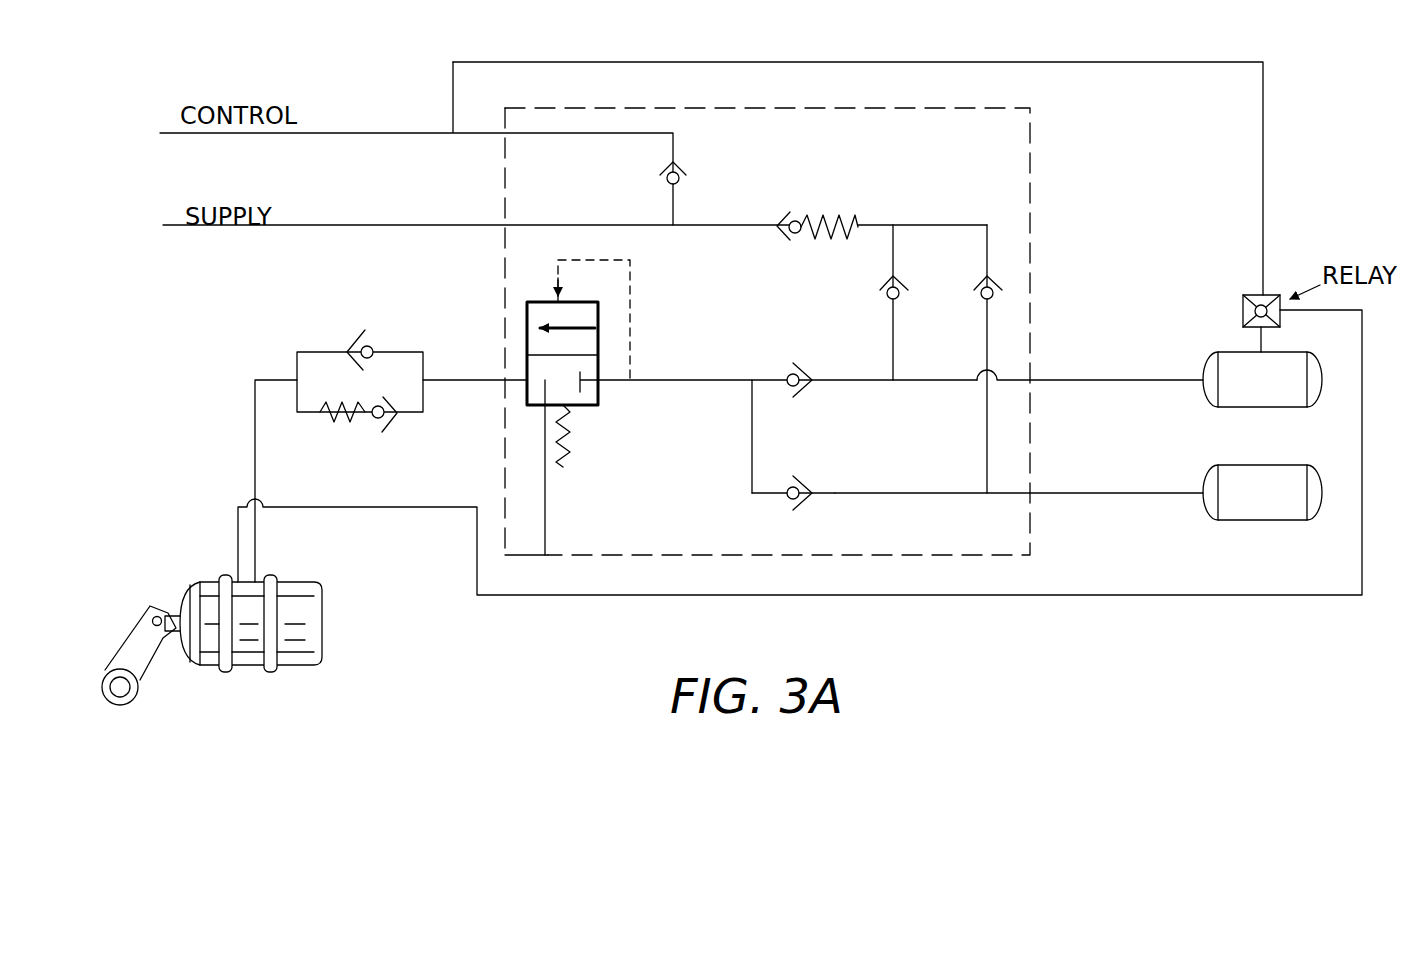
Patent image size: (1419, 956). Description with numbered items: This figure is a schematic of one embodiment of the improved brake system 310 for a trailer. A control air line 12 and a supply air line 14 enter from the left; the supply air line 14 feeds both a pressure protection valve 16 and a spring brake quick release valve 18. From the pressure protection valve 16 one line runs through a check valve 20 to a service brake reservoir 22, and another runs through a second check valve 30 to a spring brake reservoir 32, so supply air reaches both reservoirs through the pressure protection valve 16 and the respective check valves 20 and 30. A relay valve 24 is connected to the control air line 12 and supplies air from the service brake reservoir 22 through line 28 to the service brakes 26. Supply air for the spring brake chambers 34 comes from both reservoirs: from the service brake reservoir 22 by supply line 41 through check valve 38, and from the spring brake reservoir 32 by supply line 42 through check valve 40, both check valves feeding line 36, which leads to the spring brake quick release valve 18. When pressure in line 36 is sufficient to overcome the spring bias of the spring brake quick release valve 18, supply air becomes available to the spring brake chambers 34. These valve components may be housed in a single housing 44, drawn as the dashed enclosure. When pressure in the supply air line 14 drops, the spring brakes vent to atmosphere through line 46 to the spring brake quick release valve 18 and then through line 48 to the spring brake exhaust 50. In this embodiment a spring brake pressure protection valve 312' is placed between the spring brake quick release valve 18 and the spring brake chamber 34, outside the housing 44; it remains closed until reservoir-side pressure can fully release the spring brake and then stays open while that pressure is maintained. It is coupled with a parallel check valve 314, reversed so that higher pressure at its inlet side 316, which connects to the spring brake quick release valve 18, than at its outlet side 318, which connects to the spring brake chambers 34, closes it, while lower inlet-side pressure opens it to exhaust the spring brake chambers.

The control air line 12 is at (452, 110).
The supply air line 14 is at (383, 228).
The pressure protection valve 16 is at (848, 222).
The spring brake quick release valve 18 is at (526, 328).
The check valve 20 is at (886, 288).
The service brake reservoir 22 is at (1243, 412).
The relay valve 24 is at (1252, 294).
The service brakes 26 is at (195, 670).
The line 28 is at (1240, 597).
The second check valve 30 is at (978, 290).
The spring brake reservoir 32 is at (1243, 525).
The spring brake chambers 34 is at (323, 633).
The line 36 is at (630, 382).
The check valve 38 is at (805, 392).
The check valve 40 is at (808, 503).
The supply line 41 is at (836, 378).
The supply line 42 is at (920, 493).
The housing 44 is at (770, 558).
The line 46 is at (527, 385).
The line 48 is at (548, 488).
The spring brake exhaust 50 is at (555, 558).
The improved brake system 310 is at (1105, 52).
The spring brake pressure protection valve 312' is at (358, 436).
The parallel check valve 314 is at (372, 345).
The inlet side 316 is at (412, 352).
The outlet side 318 is at (312, 352).